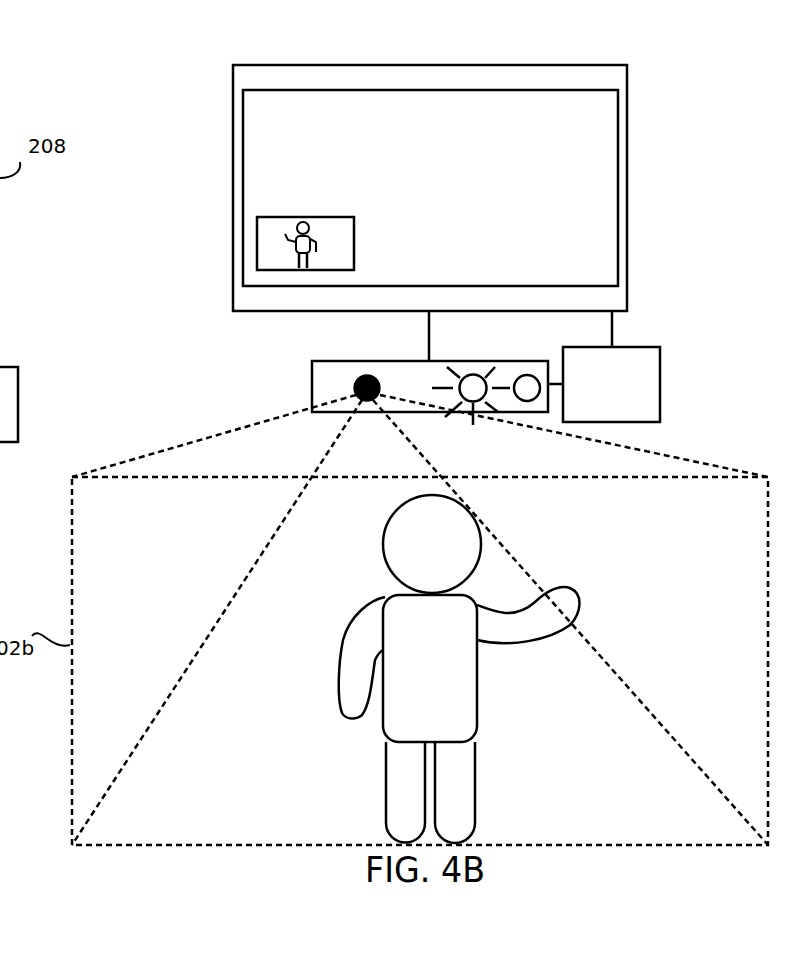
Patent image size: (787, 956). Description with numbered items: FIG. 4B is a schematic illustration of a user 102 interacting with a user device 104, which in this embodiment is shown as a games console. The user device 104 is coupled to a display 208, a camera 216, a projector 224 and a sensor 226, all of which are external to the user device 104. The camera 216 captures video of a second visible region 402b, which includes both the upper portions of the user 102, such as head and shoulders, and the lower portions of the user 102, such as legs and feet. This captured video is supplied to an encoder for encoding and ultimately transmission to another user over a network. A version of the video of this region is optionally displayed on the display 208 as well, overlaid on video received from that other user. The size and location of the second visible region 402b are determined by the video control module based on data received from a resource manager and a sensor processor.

The display 208 is at (323, 82).
The second visible region 402b is at (268, 242).
The user device 104 is at (648, 353).
The camera 216 is at (365, 372).
The projector 224 is at (473, 377).
The sensor 226 is at (526, 377).
The user 102 is at (397, 765).